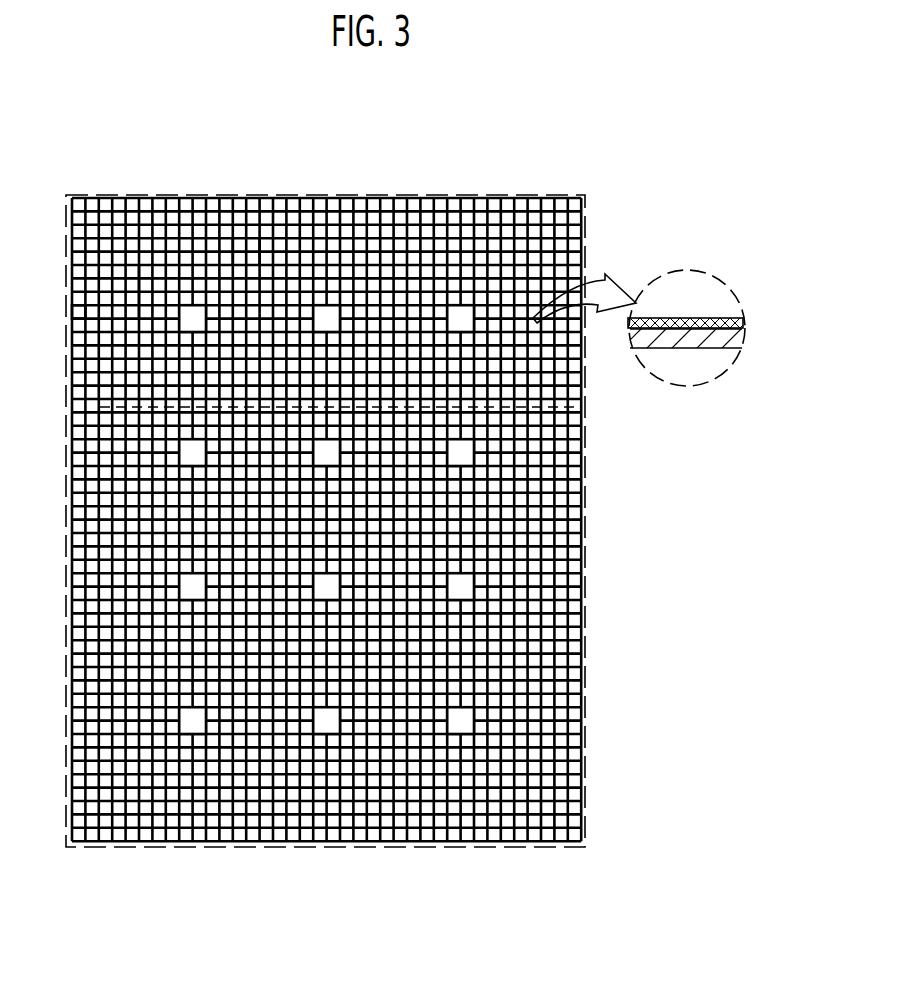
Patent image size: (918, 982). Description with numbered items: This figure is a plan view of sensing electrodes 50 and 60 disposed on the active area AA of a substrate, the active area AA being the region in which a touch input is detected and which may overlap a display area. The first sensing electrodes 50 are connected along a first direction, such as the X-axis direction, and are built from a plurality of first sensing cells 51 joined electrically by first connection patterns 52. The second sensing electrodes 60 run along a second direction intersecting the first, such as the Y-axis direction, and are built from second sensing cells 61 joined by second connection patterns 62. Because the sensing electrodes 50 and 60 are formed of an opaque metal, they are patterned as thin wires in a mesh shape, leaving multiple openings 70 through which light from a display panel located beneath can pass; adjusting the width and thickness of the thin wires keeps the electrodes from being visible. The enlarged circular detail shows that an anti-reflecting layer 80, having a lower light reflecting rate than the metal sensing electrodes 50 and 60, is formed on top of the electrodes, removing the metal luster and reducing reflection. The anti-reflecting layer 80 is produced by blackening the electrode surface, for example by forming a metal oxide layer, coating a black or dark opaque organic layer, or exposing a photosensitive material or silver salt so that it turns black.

The first sensing electrodes 50 is at (131, 385).
The first sensing cells 51 is at (100, 410).
The first connection patterns 52 is at (253, 248).
The second sensing electrodes 60 is at (121, 256).
The second sensing cells 61 is at (146, 265).
The second connection patterns 62 is at (261, 246).
The openings 70 is at (80, 313).
The anti-reflecting layer 80 is at (743, 320).
The active area AA is at (428, 175).